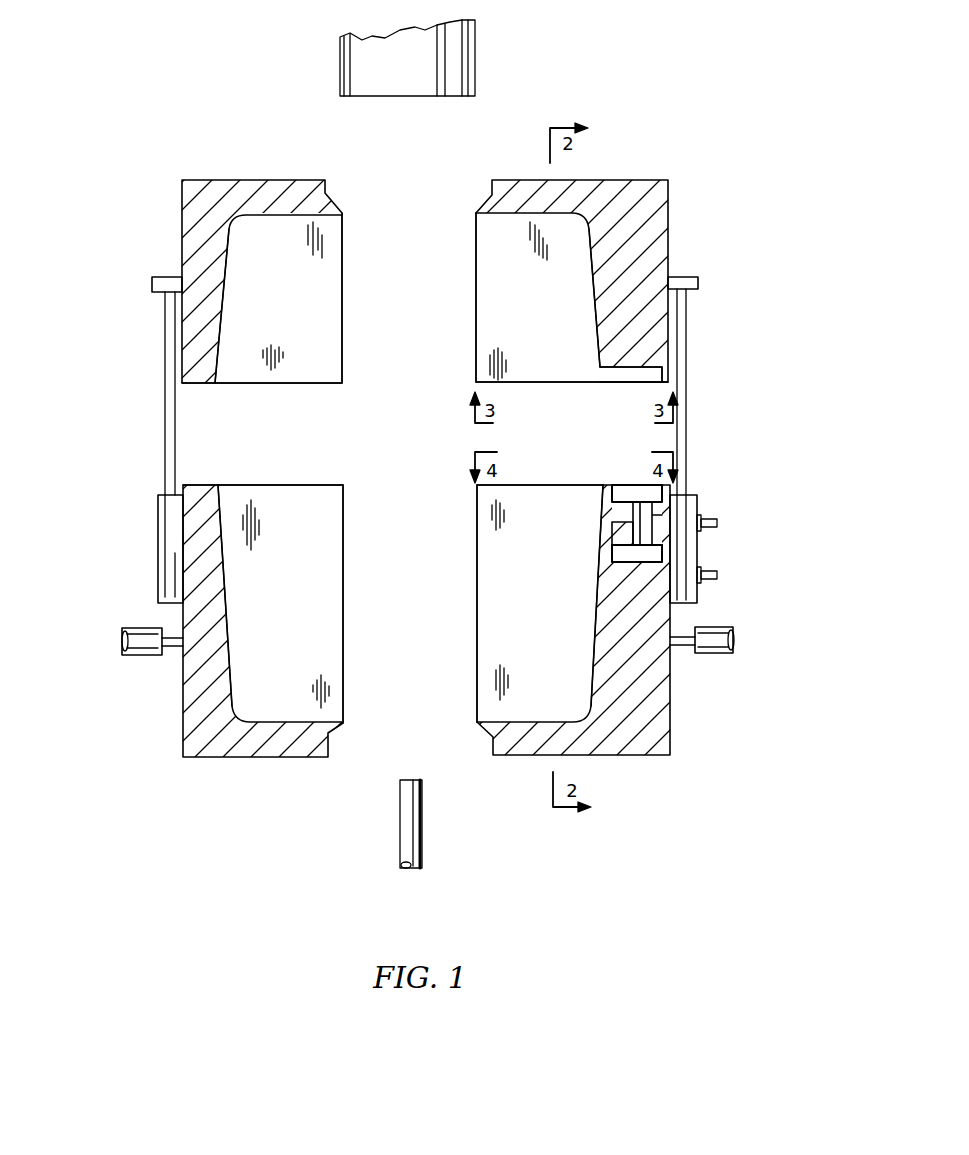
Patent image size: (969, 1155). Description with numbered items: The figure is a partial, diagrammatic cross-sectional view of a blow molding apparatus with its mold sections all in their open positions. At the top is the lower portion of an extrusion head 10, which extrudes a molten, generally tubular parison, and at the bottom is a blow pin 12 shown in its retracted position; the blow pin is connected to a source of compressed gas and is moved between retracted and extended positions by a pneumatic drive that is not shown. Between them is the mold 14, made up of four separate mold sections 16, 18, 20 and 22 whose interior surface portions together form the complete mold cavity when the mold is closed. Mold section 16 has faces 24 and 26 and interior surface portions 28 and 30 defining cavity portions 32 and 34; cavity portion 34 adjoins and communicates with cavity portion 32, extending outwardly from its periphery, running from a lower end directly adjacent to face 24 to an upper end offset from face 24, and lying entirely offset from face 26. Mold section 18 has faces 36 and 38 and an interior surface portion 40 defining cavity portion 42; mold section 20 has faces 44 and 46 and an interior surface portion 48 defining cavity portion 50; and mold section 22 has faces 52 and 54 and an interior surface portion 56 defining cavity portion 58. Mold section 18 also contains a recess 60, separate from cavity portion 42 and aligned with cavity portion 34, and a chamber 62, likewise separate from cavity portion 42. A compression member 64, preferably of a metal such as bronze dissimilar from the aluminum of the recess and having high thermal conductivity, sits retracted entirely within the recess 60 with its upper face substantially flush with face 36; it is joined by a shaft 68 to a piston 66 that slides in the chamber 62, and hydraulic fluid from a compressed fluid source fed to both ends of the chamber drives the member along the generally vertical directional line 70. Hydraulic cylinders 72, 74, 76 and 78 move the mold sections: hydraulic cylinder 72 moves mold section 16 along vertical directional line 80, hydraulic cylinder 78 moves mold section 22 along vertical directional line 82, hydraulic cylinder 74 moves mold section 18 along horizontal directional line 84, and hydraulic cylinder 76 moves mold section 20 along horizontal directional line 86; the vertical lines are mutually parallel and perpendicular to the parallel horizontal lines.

The extrusion head 10 is at (477, 58).
The blow pin 12 is at (422, 825).
The mold 14 is at (298, 146).
The mold section 16 is at (630, 179).
The mold section 18 is at (648, 757).
The mold section 20 is at (220, 758).
The mold section 22 is at (194, 179).
The face 24 is at (545, 385).
The face 26 is at (475, 334).
The interior surface portion 28 is at (591, 290).
The interior surface portion 30 is at (612, 369).
The cavity portion 32 is at (538, 296).
The cavity portion 34 is at (626, 383).
The face 36 is at (518, 484).
The face 38 is at (476, 608).
The interior surface portion 40 is at (590, 688).
The cavity portion 42 is at (540, 603).
The face 44 is at (312, 485).
The face 46 is at (343, 640).
The interior surface portion 48 is at (231, 644).
The cavity portion 50 is at (280, 603).
The face 52 is at (306, 384).
The face 54 is at (342, 290).
The interior surface portion 56 is at (232, 250).
The cavity portion 58 is at (278, 299).
The recess 60 is at (615, 487).
The chamber 62 is at (612, 526).
The compression member 64 is at (660, 497).
The piston 66 is at (637, 563).
The shaft 68 is at (612, 550).
The directional line 70 is at (635, 472).
The hydraulic cylinder 72 is at (698, 516).
The hydraulic cylinder 74 is at (720, 655).
The hydraulic cylinder 76 is at (142, 657).
The hydraulic cylinder 78 is at (157, 540).
The directional line 80 is at (737, 390).
The directional line 82 is at (112, 458).
The directional line 84 is at (823, 640).
The directional line 86 is at (30, 643).